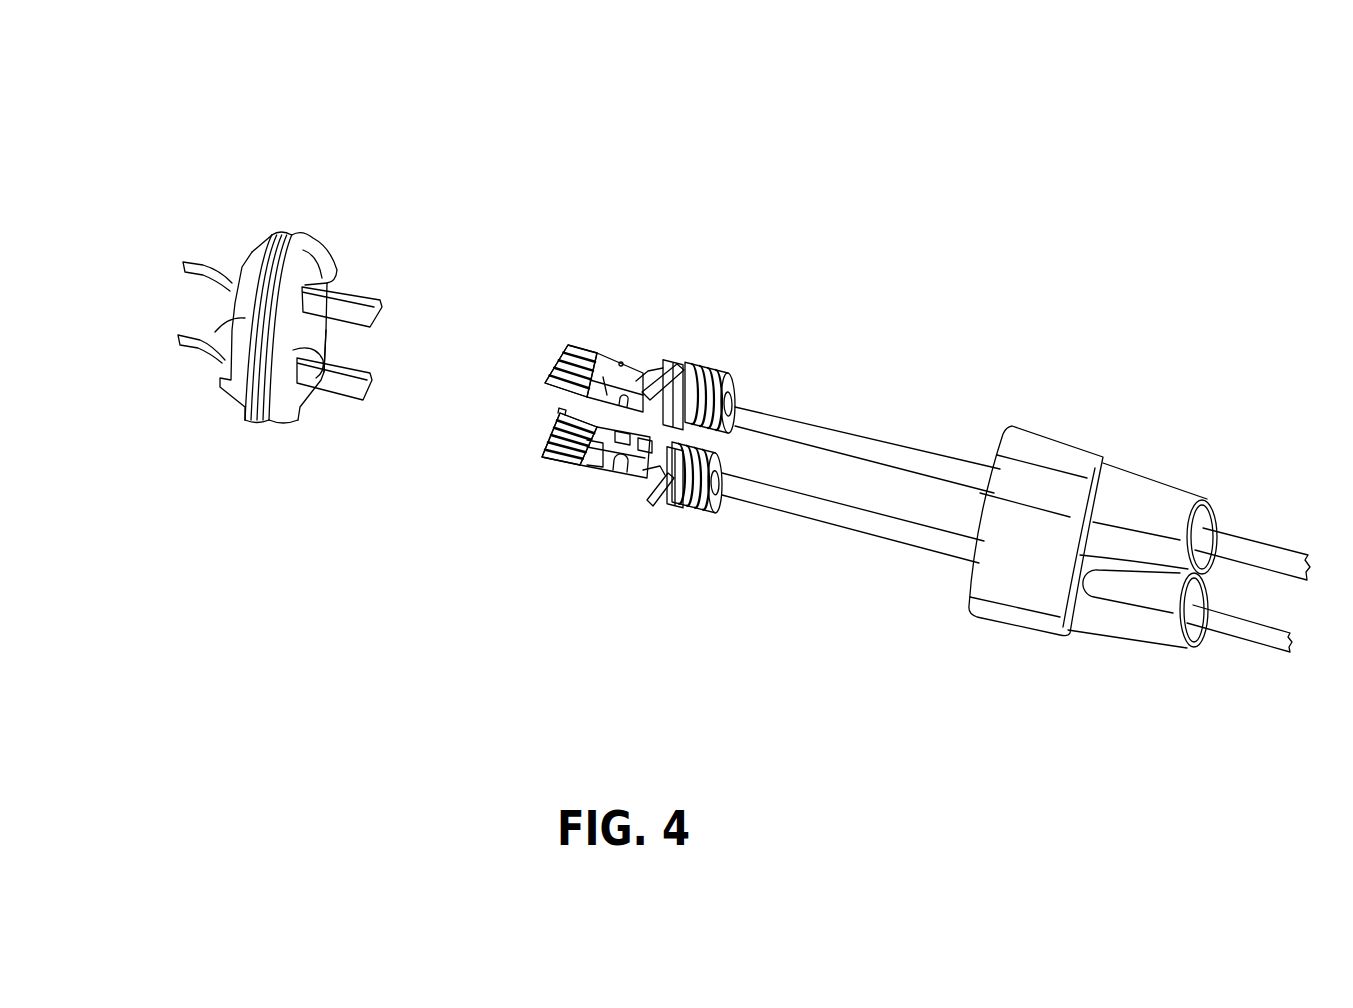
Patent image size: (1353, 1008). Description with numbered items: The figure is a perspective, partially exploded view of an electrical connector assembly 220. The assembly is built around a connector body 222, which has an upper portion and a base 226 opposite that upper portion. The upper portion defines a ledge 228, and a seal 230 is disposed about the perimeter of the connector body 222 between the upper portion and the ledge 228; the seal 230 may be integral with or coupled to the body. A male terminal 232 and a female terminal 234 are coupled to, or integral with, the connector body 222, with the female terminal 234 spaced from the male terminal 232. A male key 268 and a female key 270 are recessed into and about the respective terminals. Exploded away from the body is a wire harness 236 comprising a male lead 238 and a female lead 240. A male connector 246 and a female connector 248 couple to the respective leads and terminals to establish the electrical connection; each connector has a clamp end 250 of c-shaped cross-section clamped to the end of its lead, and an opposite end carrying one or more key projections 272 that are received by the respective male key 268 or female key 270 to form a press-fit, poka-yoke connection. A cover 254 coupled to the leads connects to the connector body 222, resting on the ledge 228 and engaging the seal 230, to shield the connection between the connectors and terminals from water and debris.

The electrical connector assembly 220 is at (212, 152).
The connector body 222 is at (222, 258).
The base 226 is at (240, 307).
The ledge 228 is at (243, 323).
The seal 230 is at (293, 252).
The male terminal 232 is at (290, 240).
The female terminal 234 is at (338, 388).
The wire harness 236 is at (835, 385).
The male lead 238 is at (650, 377).
The female lead 240 is at (630, 453).
The male connector 246 is at (590, 330).
The female connector 248 is at (565, 488).
The clamp end 250 is at (667, 473).
The cover 254 is at (1108, 490).
The male key 268 is at (322, 330).
The female key 270 is at (310, 293).
The key projections 272 is at (580, 347).